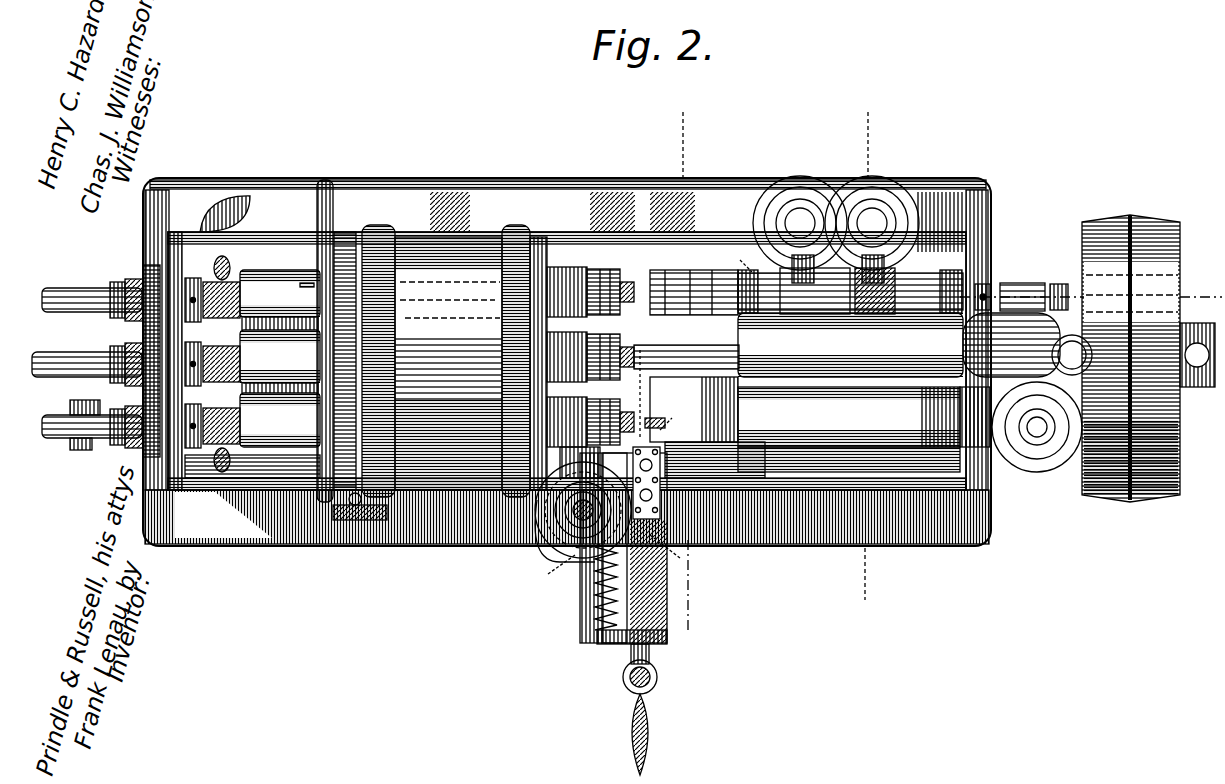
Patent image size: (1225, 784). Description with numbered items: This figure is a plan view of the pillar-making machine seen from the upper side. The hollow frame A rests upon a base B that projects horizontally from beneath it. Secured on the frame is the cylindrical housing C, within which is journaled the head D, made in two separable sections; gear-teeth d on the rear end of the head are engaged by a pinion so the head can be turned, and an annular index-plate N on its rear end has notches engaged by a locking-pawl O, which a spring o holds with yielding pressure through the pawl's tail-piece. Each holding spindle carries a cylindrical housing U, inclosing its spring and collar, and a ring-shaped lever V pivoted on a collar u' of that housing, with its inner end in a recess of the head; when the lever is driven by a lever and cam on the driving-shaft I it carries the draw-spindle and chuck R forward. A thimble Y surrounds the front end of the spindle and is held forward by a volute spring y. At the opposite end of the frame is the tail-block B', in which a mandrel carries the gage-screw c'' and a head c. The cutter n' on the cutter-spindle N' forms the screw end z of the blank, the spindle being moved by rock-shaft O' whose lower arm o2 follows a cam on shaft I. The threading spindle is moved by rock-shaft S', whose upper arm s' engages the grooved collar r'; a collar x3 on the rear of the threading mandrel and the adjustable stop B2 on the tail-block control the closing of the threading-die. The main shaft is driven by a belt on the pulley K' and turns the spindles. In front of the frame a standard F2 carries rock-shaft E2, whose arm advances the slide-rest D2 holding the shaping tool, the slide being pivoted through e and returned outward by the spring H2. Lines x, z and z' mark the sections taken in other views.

The base B is at (567, 356).
The hollow frame A is at (658, 242).
The spring o is at (318, 209).
The gear-teeth d is at (345, 234).
The cylindrical housing C is at (432, 361).
The head D is at (540, 236).
The ring-shaped lever V is at (236, 280).
The arms u' is at (220, 359).
The cylindrical housing U is at (280, 358).
The cutter n' is at (576, 341).
The annular plate N is at (252, 466).
The thimble Y is at (590, 346).
The volute spring y is at (588, 270).
The chuck R is at (685, 279).
The screw end z is at (928, 354).
The section line x is at (683, 373).
The section line z' is at (636, 395).
The gage-screw c'' is at (694, 407).
The driving-shaft I is at (655, 414).
The lever c is at (666, 426).
The rock-shaft S' is at (800, 215).
The rock-shaft O' is at (872, 215).
The upper radial arm s' is at (738, 257).
The grooved collar r' is at (850, 305).
The lower radial arm o2 is at (878, 314).
The cutter-spindle N' is at (850, 345).
The tail-block B' is at (864, 410).
The locking-pawl O is at (1027, 392).
The collar x3 is at (990, 286).
The adjustable stop B2 is at (1020, 284).
The pulley K' is at (1148, 346).
The standard F2 is at (540, 532).
The rock-shaft E2 is at (553, 573).
The slide-rest D2 is at (650, 580).
The pin e is at (668, 554).
The spring H2 is at (596, 606).